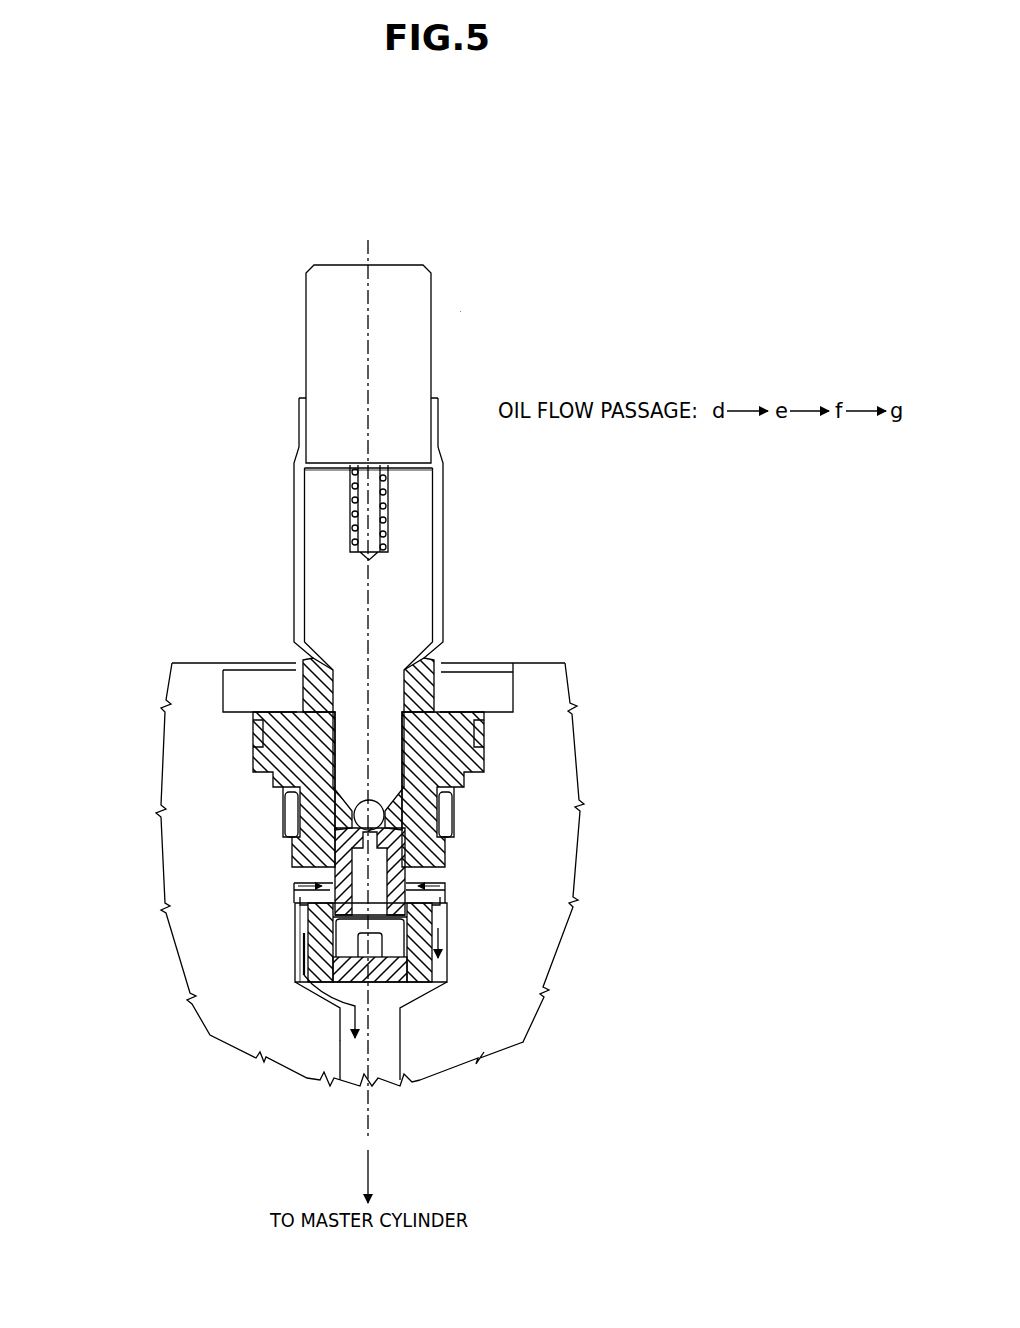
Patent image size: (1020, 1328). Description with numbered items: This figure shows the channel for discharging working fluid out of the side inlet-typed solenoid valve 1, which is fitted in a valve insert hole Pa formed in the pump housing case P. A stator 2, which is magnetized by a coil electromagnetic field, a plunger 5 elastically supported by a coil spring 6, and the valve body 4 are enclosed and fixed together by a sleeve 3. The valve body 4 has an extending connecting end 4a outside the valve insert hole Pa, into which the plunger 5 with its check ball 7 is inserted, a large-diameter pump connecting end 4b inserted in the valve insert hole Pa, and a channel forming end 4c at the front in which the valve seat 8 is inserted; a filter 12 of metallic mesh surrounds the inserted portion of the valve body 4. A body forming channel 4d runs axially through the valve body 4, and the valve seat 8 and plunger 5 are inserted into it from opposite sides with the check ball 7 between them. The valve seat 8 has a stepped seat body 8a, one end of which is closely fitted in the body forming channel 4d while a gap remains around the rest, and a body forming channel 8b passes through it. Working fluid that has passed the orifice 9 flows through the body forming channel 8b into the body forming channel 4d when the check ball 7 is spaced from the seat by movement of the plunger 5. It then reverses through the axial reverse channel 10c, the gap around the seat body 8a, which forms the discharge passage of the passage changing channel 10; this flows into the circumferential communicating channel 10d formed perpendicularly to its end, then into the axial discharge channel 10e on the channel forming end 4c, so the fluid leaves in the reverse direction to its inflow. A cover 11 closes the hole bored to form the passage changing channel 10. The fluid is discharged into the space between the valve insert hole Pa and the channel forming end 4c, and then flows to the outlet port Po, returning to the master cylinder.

The solenoid valve 1 is at (462, 311).
The stator 2 is at (322, 318).
The sleeve 3 is at (302, 448).
The valve body 4 is at (337, 734).
The extending connecting end 4a is at (303, 658).
The pump connecting end 4b is at (283, 740).
The channel forming end 4c is at (313, 820).
The body forming channel 4d is at (404, 805).
The plunger 5 is at (413, 547).
The coil spring 6 is at (355, 508).
The check ball 7 is at (373, 798).
The valve seat 8 is at (477, 947).
The seat body 8a is at (410, 892).
The body forming channel 8b is at (442, 858).
The orifice 9 is at (303, 957).
The passage changing channel 10 is at (226, 940).
The axial reverse channel 10c is at (305, 893).
The circumferential communicating channel 10d is at (302, 932).
The axial discharge channel 10e is at (312, 900).
The cover 11 is at (417, 992).
The filter 12 is at (283, 842).
The pump housing case P is at (302, 1053).
The outlet port Po is at (363, 1060).
The valve insert hole Pa is at (417, 992).